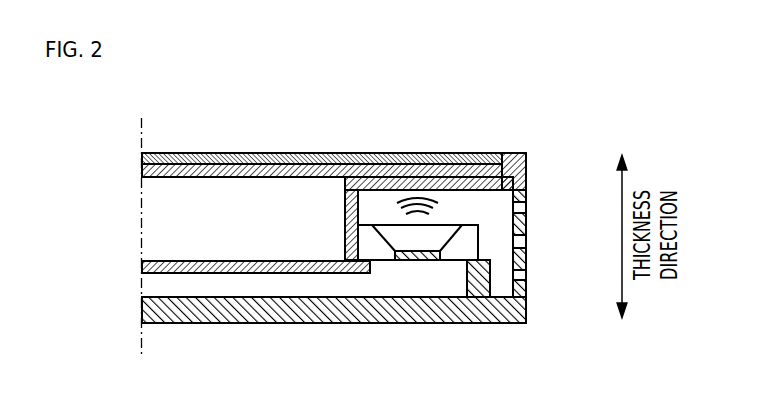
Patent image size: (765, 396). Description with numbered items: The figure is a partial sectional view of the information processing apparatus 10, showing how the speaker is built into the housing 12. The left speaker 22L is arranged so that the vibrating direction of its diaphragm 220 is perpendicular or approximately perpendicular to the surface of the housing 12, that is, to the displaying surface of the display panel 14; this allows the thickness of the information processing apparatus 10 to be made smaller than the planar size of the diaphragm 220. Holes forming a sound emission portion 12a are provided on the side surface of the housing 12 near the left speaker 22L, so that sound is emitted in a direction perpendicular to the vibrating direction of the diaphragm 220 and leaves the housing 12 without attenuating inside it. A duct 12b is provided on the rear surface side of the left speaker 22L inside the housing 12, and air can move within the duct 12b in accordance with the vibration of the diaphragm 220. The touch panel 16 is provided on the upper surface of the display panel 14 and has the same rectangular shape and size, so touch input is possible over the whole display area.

The information processing apparatus 10 is at (407, 143).
The housing 12 is at (527, 166).
The sound emission portion 12a is at (544, 242).
The duct 12b is at (408, 285).
The display panel 14 is at (237, 177).
The touch panel 16 is at (237, 157).
The left speaker 22L is at (372, 230).
The diaphragm 220 is at (440, 235).